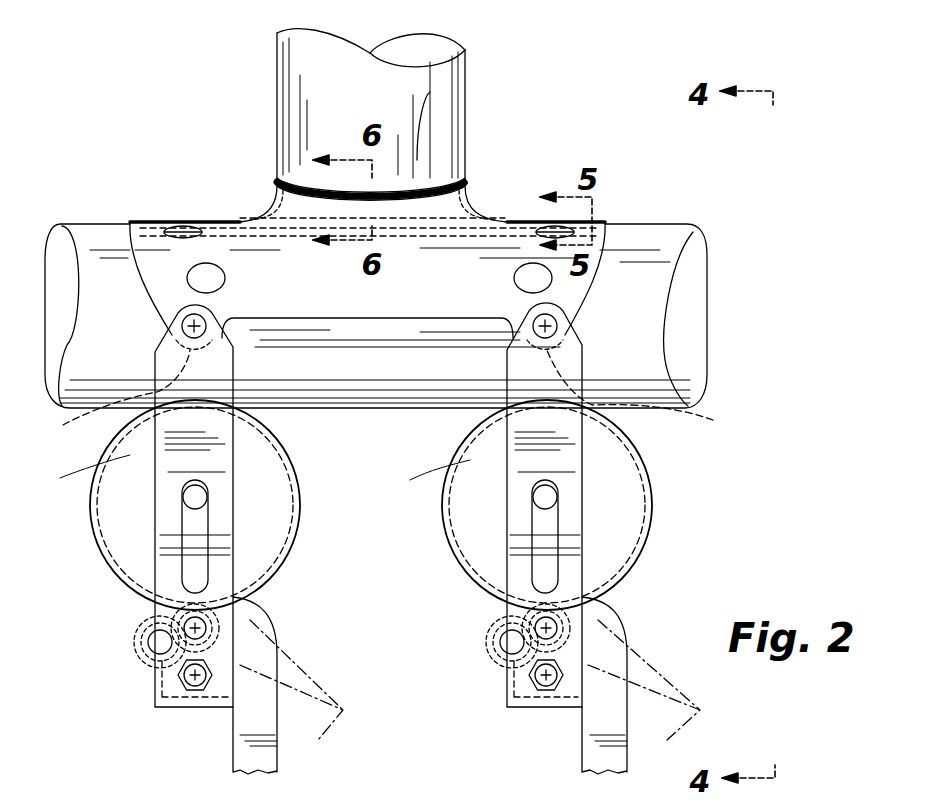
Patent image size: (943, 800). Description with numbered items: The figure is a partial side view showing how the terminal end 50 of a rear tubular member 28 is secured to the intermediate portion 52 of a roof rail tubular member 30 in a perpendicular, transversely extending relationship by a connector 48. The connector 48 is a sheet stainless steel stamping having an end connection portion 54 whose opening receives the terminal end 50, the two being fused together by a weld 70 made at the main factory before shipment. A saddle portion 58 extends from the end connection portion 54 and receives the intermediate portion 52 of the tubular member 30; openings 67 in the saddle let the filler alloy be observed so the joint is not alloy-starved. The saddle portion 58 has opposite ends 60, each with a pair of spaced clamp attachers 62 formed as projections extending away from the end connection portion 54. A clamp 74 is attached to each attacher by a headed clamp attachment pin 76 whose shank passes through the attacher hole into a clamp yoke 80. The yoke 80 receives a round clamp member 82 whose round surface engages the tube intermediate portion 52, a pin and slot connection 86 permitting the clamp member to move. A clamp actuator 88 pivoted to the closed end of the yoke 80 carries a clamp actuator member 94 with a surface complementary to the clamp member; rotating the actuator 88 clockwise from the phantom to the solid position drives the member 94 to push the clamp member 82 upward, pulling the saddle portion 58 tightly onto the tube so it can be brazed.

The rear tubular member 28 is at (470, 65).
The roof rail tubular member 30 is at (637, 220).
The connector 48 is at (257, 212).
The terminal end 50 is at (457, 135).
The intermediate portion 52 is at (345, 380).
The end connection portion 54 is at (248, 210).
The saddle portion 58 is at (510, 213).
The opposite ends 60 is at (130, 277).
The clamp attachers 62 is at (387, 399).
The openings 67 is at (188, 275).
The weld 70 is at (430, 92).
The clamp 74 is at (280, 615).
The headed clamp attachment pin 76 is at (190, 322).
The clamp yoke 80 is at (167, 453).
The round clamp member 82 is at (92, 530).
The pin and slot connection 86 is at (202, 512).
The clamp actuator 88 is at (280, 762).
The clamp actuator member 94 is at (148, 636).